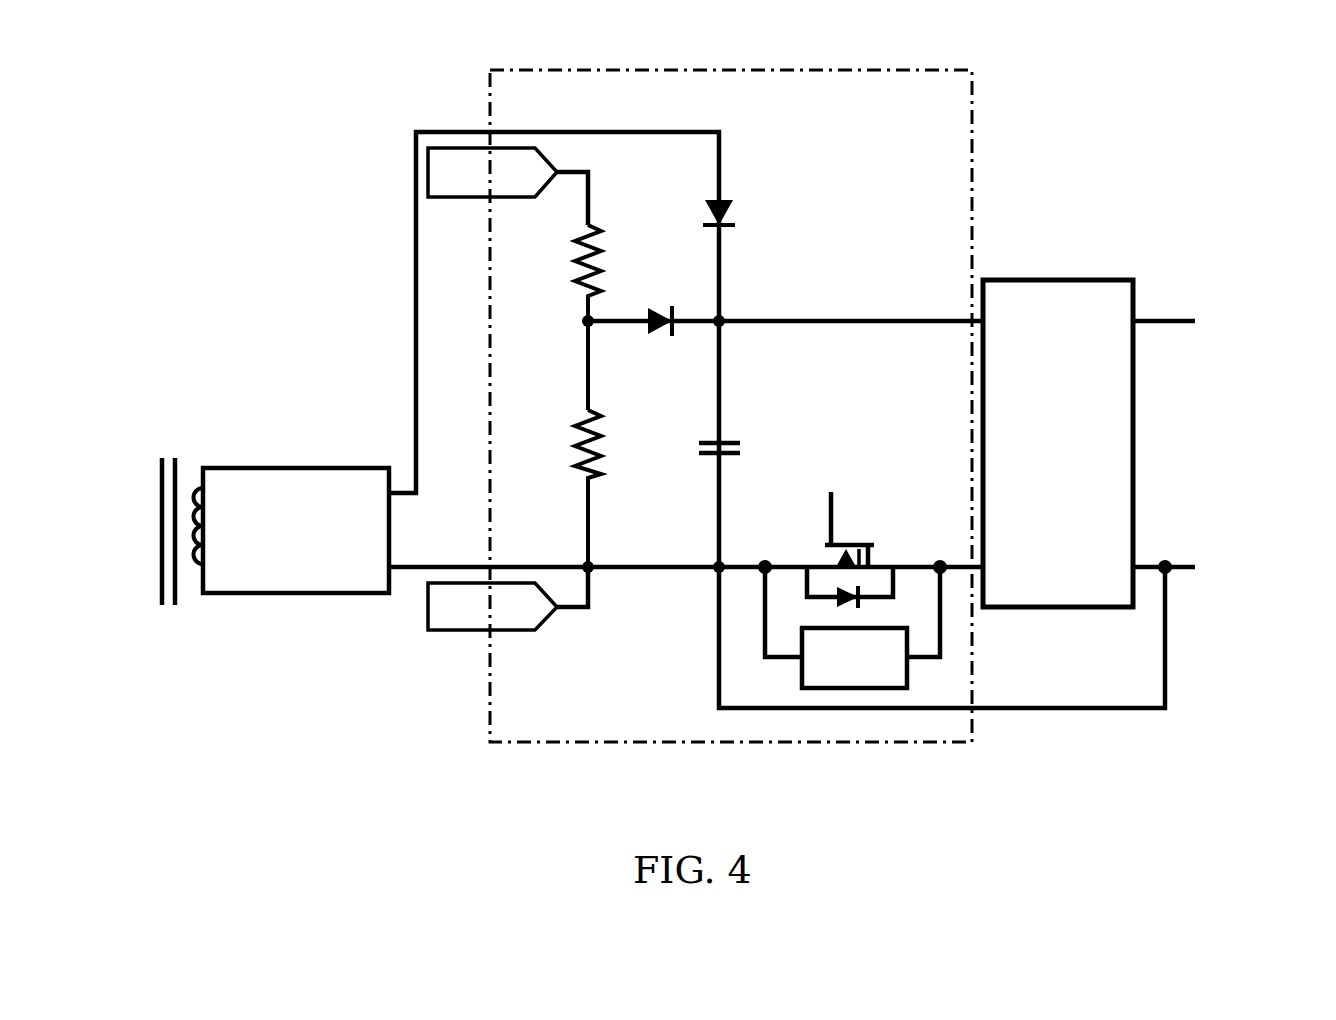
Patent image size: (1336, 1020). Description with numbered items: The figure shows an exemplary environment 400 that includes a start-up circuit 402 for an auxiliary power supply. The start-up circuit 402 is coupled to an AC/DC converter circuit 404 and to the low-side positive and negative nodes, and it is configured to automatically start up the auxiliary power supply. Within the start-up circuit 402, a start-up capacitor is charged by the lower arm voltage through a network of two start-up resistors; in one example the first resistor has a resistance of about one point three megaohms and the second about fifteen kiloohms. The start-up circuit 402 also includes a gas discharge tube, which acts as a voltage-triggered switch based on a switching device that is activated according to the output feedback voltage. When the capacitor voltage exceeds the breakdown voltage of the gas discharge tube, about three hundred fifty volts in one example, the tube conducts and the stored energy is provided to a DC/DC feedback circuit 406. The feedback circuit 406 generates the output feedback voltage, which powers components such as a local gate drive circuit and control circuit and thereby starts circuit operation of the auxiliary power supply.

The environment 400 is at (266, 78).
The start-up circuit 402 is at (972, 70).
The AC/DC converter circuit 404 is at (275, 467).
The DC/DC feedback circuit 406 is at (1025, 279).